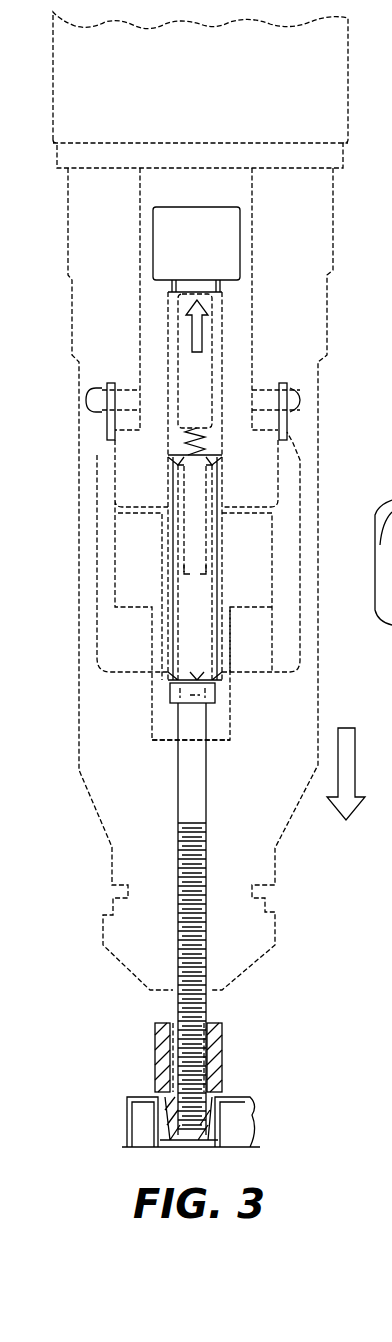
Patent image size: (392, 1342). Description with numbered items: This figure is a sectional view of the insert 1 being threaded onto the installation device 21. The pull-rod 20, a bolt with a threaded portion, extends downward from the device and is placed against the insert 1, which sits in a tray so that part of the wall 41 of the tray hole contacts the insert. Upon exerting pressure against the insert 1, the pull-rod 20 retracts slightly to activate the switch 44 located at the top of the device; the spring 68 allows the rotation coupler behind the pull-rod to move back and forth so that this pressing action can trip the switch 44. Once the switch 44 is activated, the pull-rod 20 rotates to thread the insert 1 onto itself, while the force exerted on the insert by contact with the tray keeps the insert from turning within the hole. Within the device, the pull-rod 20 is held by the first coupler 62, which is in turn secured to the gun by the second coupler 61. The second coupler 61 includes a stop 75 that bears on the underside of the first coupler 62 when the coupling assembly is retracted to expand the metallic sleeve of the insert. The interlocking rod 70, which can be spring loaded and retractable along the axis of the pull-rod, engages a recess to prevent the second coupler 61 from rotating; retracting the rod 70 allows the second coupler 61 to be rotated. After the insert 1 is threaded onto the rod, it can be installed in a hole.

The insert 1 is at (228, 1018).
The pull-rod 20 is at (178, 1003).
The installation device 21 is at (52, 672).
The wall 41 is at (245, 1108).
The switch 44 is at (232, 249).
The second coupler 61 is at (300, 655).
The first coupler 62 is at (230, 700).
The spring 68 is at (185, 440).
The interlocking rod 70 is at (300, 392).
The stop 75 is at (258, 620).